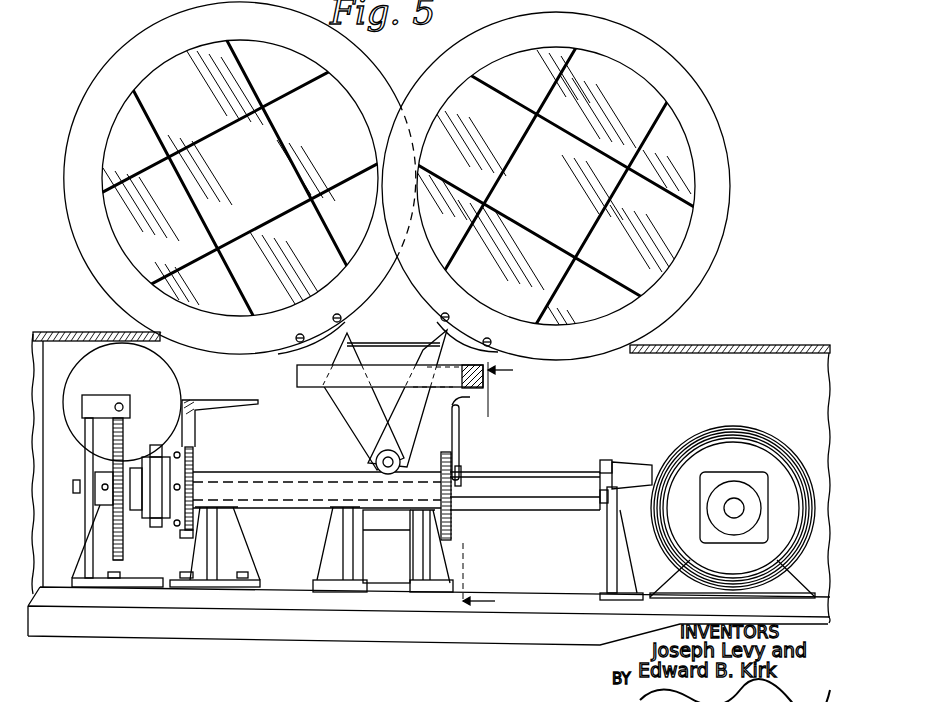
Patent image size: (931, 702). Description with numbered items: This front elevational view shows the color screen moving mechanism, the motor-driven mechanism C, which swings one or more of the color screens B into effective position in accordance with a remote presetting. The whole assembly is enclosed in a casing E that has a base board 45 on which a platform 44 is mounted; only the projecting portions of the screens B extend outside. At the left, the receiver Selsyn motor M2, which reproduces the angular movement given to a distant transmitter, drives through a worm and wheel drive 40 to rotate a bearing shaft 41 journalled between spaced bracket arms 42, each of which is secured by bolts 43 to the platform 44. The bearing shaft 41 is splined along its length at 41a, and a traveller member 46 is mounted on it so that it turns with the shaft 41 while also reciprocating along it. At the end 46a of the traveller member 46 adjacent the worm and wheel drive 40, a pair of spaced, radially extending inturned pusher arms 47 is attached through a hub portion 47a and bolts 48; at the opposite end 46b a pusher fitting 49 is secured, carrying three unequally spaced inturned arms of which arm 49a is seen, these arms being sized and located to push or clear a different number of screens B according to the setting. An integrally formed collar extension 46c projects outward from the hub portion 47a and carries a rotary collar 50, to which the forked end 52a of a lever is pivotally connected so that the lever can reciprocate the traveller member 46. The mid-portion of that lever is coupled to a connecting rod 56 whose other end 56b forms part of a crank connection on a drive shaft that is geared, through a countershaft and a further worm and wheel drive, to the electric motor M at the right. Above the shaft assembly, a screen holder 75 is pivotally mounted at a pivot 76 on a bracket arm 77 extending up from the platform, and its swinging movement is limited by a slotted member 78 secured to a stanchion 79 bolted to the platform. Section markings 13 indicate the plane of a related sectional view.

The section line 13 is at (498, 488).
The worm and wheel drive 40 is at (122, 430).
The bearing shaft 41 is at (118, 517).
The spline 41a is at (562, 492).
The bracket arms 42 is at (98, 402).
The bolts 43 is at (128, 577).
The platform 44 is at (287, 587).
The base board 45 is at (428, 627).
The traveller member 46 is at (290, 473).
The end of traveller member 46a is at (197, 467).
The end of traveller member 46b is at (440, 537).
The collar extension 46c is at (132, 465).
The pusher arm 47 is at (240, 380).
The hub portion 47a is at (180, 530).
The bolts 48 is at (158, 490).
The pusher fitting 49 is at (457, 450).
The inturned arm 49a is at (457, 397).
The rotary collar 50 is at (192, 507).
The forked end of lever 52a is at (163, 457).
The connecting rod 56 is at (522, 475).
The end of connecting rod 56b is at (643, 470).
The screen holder 75 is at (427, 370).
The pivot 76 is at (382, 453).
The bracket arm 77 is at (375, 563).
The slotted member 78 is at (367, 373).
The stanchion 79 is at (333, 543).
The color screens B is at (430, 72).
The motor-driven mechanism C is at (573, 400).
The casing E is at (722, 345).
The electric motor M is at (733, 445).
The receiver Selsyn motor M2 is at (122, 402).